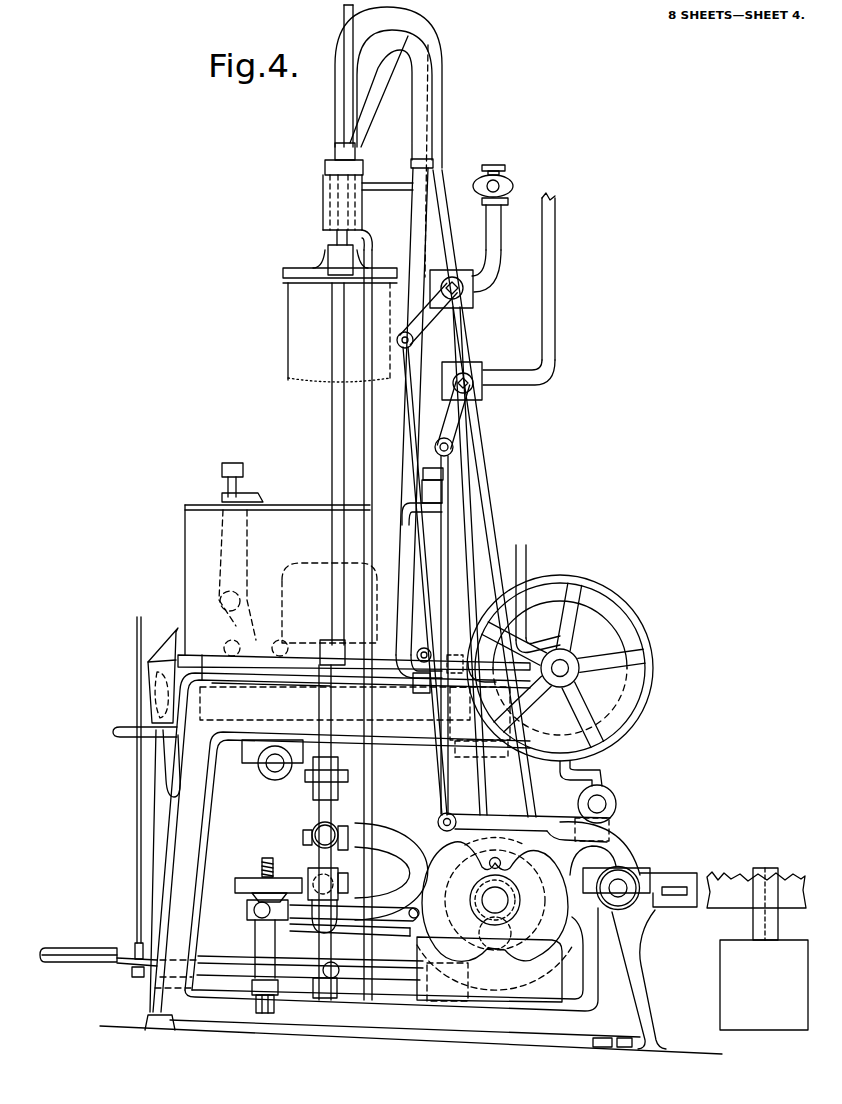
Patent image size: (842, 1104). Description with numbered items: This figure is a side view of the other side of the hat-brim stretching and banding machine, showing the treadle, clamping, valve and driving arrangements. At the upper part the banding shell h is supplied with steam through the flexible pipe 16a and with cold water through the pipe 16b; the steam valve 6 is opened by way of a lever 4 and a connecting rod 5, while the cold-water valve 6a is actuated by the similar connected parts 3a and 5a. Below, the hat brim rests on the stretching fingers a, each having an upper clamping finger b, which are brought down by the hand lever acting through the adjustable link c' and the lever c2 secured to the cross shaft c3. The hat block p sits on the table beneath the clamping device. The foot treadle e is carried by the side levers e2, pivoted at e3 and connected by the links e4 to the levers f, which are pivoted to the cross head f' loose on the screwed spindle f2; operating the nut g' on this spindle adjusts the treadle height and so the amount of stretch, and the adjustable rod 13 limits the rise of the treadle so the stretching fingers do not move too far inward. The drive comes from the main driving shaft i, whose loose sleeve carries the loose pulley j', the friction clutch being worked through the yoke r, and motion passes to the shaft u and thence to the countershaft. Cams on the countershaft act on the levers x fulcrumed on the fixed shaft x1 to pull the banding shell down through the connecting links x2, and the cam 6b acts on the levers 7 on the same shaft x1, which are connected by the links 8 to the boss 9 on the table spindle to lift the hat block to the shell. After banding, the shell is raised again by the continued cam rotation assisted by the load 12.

The pipe 16b is at (418, 34).
The flexible pipe 16a is at (445, 121).
The banding shell h is at (298, 340).
The valve 6a is at (473, 296).
The valve 6 is at (483, 395).
The lever 4 is at (424, 326).
The connecting rod 5a is at (414, 429).
The connecting rod 5 is at (449, 517).
The upper clamping finger b is at (236, 466).
The stretching finger a is at (257, 498).
The hat block p is at (303, 563).
The foot treadle e is at (186, 638).
The lever c2 is at (220, 782).
The adjustable rod 13 is at (140, 848).
The adjustable link c' is at (136, 755).
The cross shaft c3 is at (275, 766).
The connecting link x2 is at (320, 812).
The boss 9 is at (312, 835).
The link 8 is at (320, 860).
The screwed spindle f2 is at (263, 860).
The nut g' is at (254, 883).
The cross head f' is at (245, 956).
The lever f is at (354, 899).
The lever 7 is at (395, 929).
The side lever e2 is at (215, 958).
The pivot e3 is at (322, 990).
The link e4 is at (428, 980).
The lever x is at (398, 836).
The pivoted lever 3a is at (482, 801).
The cam 6b is at (578, 829).
The fixed shaft x1 is at (621, 886).
The load 12 is at (759, 1022).
The loose pulley j' is at (563, 668).
The yoke r is at (583, 696).
The main driving shaft i is at (568, 661).
The shaft u is at (601, 803).